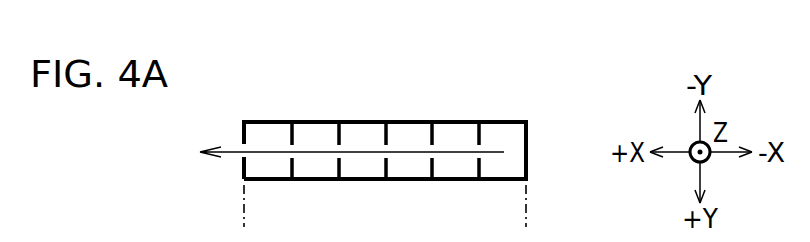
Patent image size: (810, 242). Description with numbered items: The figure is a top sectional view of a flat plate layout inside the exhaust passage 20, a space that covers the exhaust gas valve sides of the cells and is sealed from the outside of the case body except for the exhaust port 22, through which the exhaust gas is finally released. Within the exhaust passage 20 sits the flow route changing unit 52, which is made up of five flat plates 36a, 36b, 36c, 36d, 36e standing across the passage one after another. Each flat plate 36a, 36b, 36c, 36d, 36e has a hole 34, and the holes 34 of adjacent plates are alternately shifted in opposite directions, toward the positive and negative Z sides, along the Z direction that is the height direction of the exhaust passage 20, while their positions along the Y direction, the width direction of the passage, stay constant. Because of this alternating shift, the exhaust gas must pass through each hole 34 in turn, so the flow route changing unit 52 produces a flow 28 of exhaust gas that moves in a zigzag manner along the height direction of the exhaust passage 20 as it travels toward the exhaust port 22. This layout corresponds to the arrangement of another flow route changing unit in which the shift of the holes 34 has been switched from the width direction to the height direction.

The exhaust passage 20 is at (527, 134).
The exhaust port 22 is at (245, 158).
The flow 28 is at (359, 155).
The hole 34 is at (467, 164).
The flat plate 36a is at (472, 133).
The flat plate 36b is at (428, 131).
The flat plate 36c is at (379, 131).
The flat plate 36d is at (331, 134).
The flat plate 36e is at (285, 133).
The flow route changing unit 52 is at (515, 67).